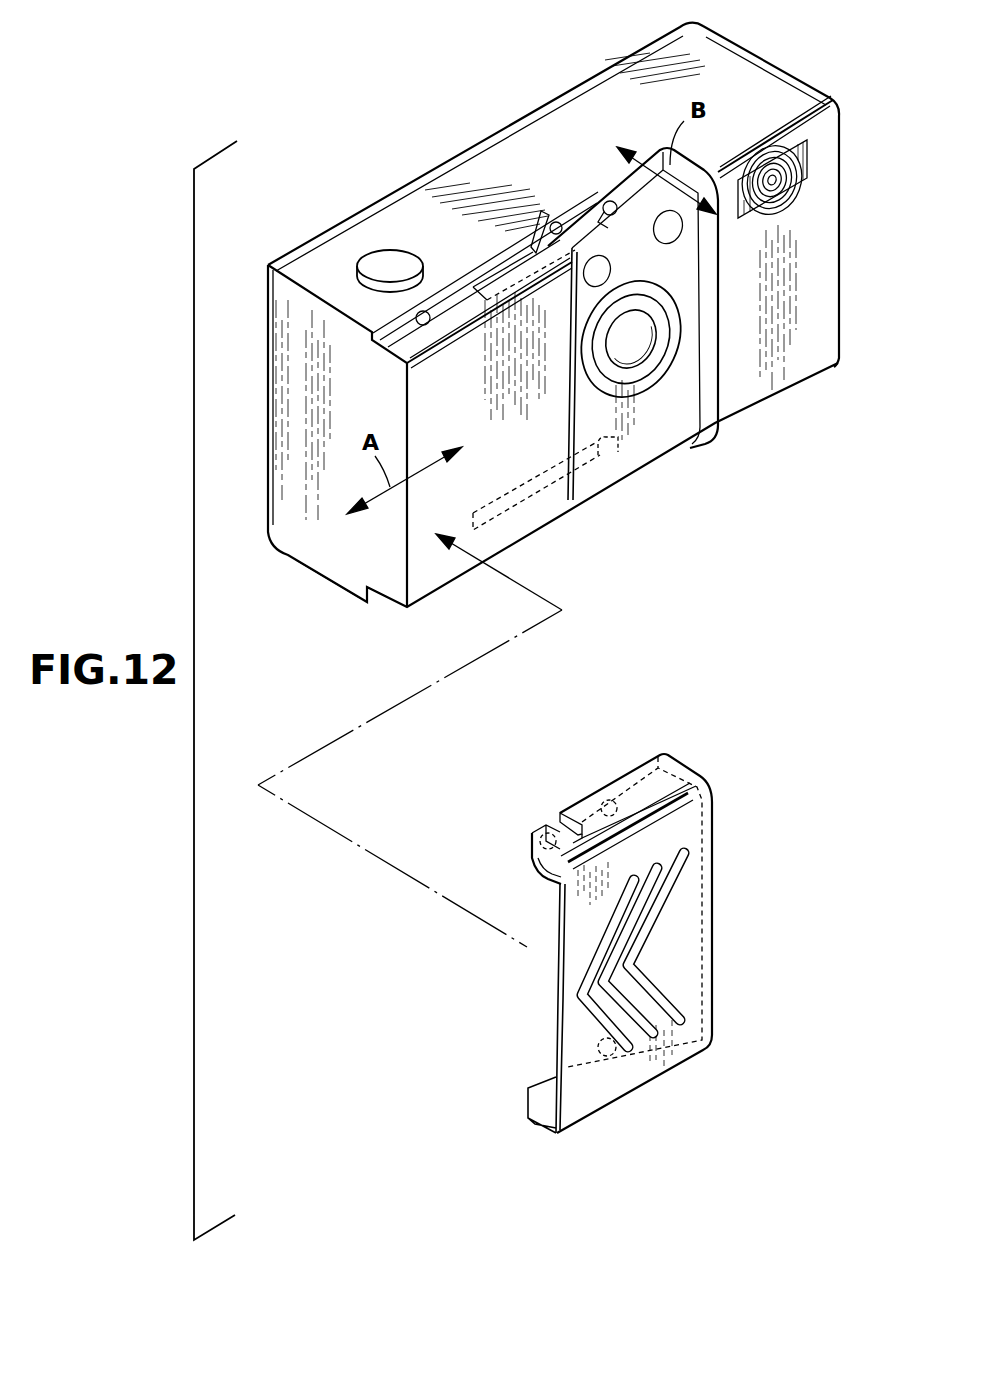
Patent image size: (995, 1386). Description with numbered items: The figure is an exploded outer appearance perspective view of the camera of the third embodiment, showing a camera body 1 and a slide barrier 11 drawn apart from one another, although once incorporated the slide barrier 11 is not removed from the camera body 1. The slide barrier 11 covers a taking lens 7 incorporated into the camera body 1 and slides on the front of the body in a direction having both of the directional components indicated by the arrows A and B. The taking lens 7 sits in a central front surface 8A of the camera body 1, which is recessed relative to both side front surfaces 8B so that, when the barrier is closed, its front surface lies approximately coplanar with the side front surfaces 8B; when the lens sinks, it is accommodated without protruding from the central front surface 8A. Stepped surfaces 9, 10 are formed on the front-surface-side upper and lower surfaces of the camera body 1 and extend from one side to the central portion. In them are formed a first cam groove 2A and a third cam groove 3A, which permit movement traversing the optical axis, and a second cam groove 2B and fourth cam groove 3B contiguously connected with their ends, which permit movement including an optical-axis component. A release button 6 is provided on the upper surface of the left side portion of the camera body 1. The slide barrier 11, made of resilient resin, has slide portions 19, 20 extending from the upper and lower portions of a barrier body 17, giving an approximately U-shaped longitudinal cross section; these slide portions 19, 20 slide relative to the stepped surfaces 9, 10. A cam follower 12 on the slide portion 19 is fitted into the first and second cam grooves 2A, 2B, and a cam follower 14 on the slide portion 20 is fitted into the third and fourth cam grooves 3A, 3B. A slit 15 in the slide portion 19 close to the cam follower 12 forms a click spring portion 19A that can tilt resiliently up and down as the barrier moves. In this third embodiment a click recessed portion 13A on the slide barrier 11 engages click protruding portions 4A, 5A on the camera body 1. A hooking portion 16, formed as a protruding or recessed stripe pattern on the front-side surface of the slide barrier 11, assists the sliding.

The camera body 1 is at (758, 80).
The first cam groove 2A is at (559, 222).
The second cam groove 2B is at (610, 200).
The third cam groove 3A is at (588, 470).
The fourth cam groove 3B is at (618, 452).
The click protruding portion 4A is at (545, 212).
The click protruding portion 5A is at (423, 311).
The release button 6 is at (385, 262).
The taking lens 7 is at (638, 357).
The central front surface 8A is at (683, 378).
The side front surfaces 8B is at (440, 398).
The stepped surface 9 is at (400, 345).
The stepped surface 10 is at (383, 600).
The slide barrier 11 is at (735, 828).
The cam follower 12 is at (609, 800).
The click recessed portion 13A is at (546, 833).
The cam follower 14 is at (598, 1045).
The slit 15 is at (566, 812).
The hooking portion 16 is at (665, 985).
The barrier body 17 is at (685, 930).
The slide portion 19 is at (662, 782).
The click spring portion 19A is at (545, 840).
The slide portion 20 is at (541, 1108).